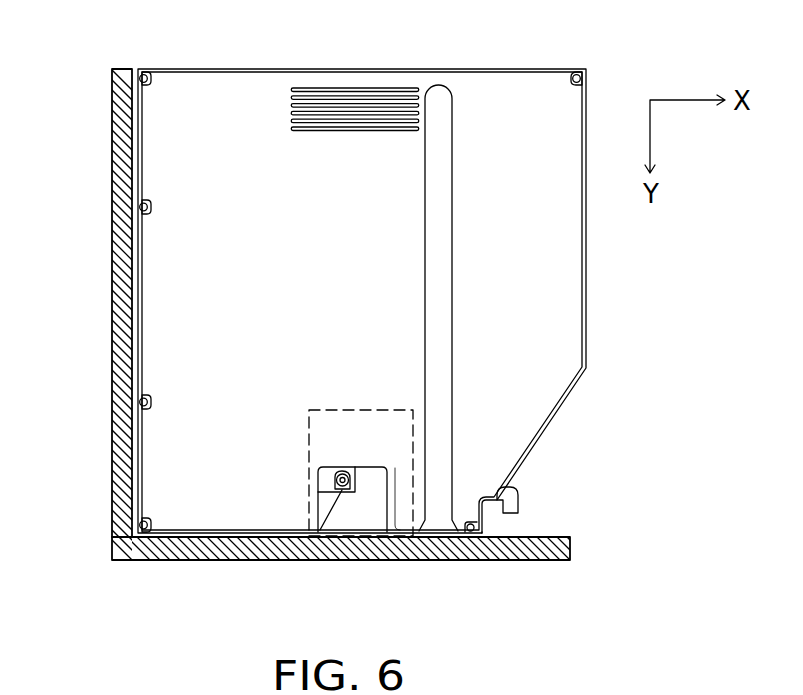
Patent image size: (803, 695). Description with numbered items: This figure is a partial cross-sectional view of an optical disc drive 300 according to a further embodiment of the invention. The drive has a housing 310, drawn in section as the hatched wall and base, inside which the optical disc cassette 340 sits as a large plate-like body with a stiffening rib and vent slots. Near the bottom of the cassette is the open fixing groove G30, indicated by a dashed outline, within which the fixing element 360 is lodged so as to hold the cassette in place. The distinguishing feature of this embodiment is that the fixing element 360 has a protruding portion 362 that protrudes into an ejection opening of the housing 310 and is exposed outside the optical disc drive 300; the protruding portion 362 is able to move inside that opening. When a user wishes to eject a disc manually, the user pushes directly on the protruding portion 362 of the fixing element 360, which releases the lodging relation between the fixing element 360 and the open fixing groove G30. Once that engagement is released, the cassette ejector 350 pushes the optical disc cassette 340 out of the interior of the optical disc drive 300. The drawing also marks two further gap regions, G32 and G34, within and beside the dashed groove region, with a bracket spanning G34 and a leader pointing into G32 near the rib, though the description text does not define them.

The optical disc drive 300 is at (641, 611).
The housing 310 is at (112, 276).
The optical disc cassette 340 is at (560, 229).
The cassette ejector 350 is at (356, 612).
The fixing element 360 is at (336, 482).
The protruding portion 362 is at (348, 489).
The open fixing groove G30 is at (309, 461).
The gap G32 is at (400, 530).
The gap G34 is at (390, 453).